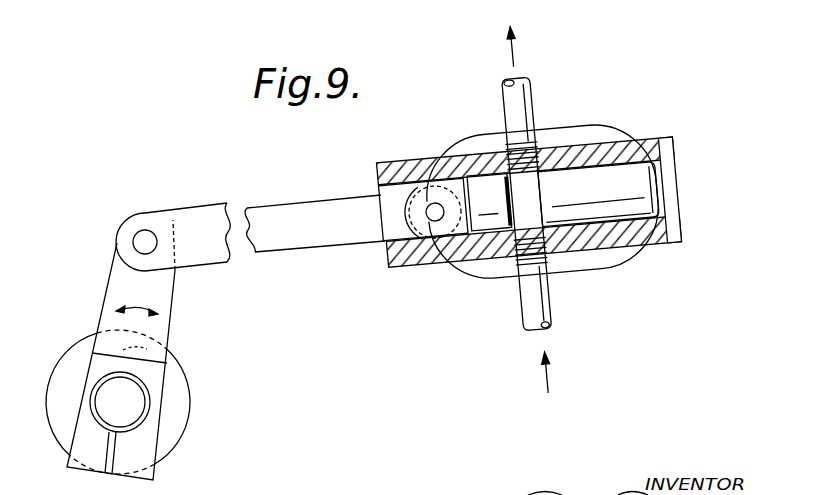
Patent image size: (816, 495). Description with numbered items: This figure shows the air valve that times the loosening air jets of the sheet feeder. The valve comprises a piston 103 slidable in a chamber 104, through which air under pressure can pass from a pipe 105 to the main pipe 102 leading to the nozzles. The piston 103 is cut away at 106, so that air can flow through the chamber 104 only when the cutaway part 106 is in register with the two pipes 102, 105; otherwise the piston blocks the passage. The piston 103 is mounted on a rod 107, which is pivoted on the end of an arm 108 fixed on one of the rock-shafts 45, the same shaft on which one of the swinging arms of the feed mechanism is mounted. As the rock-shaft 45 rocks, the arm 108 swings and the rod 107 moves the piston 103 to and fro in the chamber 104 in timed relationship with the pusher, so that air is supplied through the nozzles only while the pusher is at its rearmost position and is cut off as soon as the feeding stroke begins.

The rock-shaft 45 is at (137, 407).
The pipe 102 is at (525, 113).
The piston 103 is at (563, 196).
The chamber 104 is at (642, 156).
The pipe 105 is at (560, 320).
The cutaway part of piston 106 is at (518, 269).
The rod 107 is at (287, 212).
The arm 108 is at (167, 305).